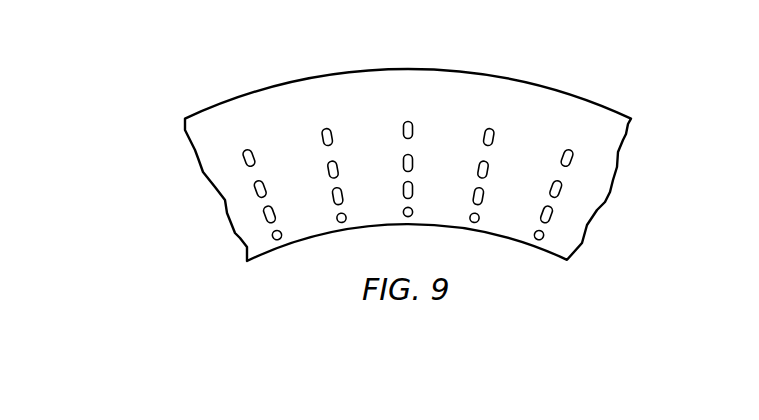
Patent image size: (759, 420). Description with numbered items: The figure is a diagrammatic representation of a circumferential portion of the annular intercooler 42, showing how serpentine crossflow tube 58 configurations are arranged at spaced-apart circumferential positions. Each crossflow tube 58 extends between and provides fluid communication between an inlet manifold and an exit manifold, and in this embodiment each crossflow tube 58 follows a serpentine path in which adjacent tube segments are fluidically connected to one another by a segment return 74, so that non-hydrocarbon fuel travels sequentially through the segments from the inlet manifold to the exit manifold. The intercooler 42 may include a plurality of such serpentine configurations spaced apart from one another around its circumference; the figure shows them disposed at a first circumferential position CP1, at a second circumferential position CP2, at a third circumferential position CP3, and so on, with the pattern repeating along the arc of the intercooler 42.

The intercooler 42 is at (633, 93).
The segment return 74 is at (561, 187).
The crossflow tube 58 is at (478, 222).
The first circumferential position CP1 is at (242, 138).
The second circumferential position CP2 is at (325, 118).
The third circumferential position CP3 is at (412, 110).